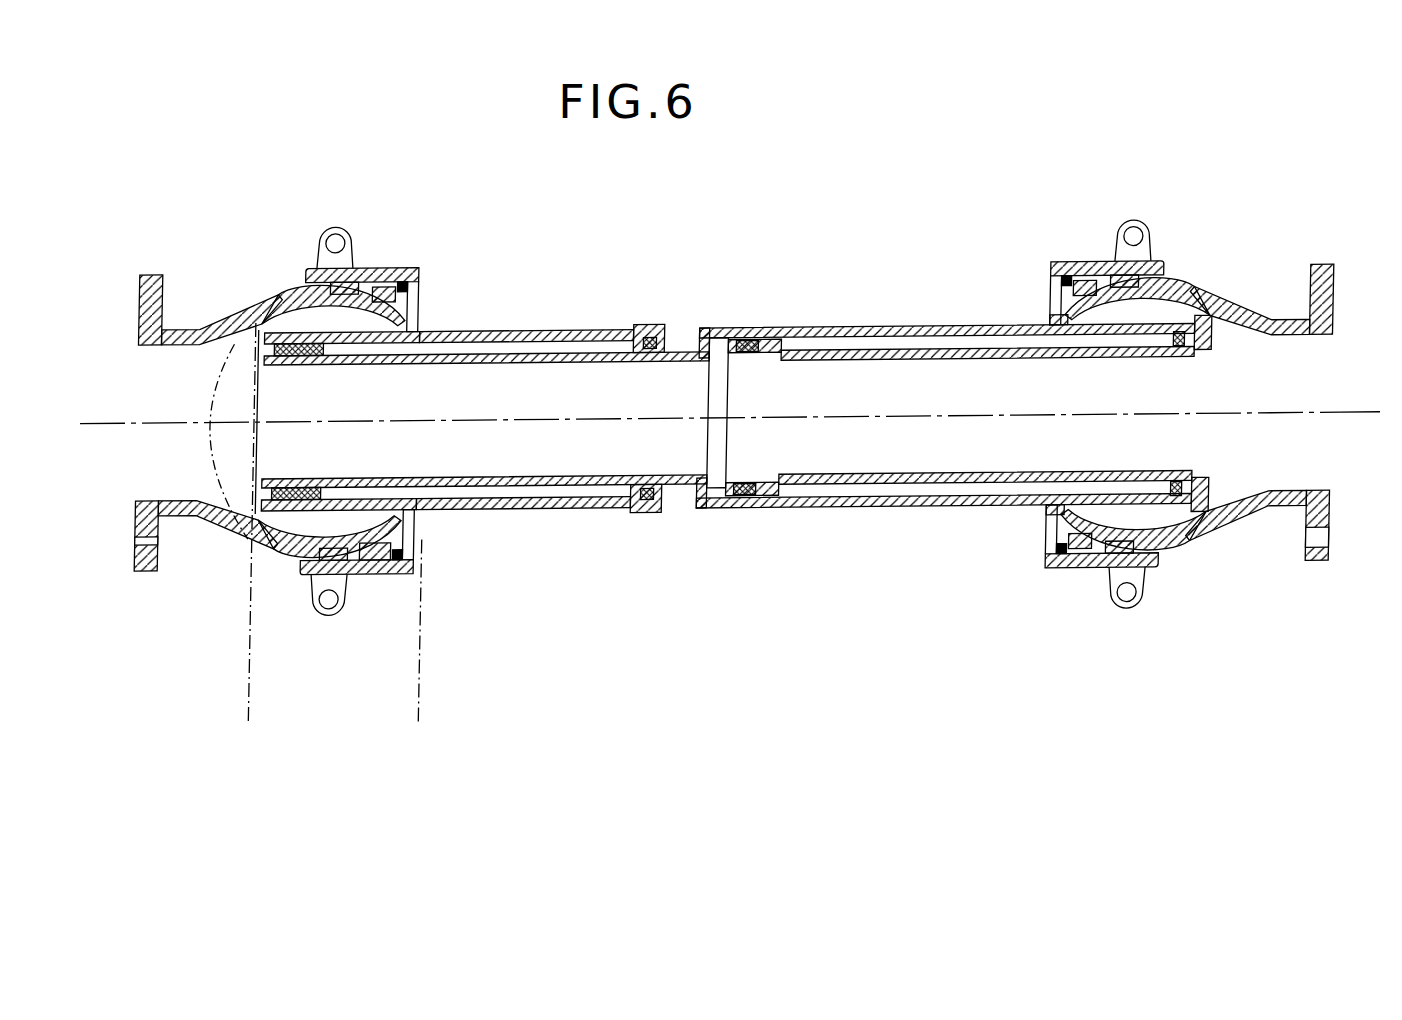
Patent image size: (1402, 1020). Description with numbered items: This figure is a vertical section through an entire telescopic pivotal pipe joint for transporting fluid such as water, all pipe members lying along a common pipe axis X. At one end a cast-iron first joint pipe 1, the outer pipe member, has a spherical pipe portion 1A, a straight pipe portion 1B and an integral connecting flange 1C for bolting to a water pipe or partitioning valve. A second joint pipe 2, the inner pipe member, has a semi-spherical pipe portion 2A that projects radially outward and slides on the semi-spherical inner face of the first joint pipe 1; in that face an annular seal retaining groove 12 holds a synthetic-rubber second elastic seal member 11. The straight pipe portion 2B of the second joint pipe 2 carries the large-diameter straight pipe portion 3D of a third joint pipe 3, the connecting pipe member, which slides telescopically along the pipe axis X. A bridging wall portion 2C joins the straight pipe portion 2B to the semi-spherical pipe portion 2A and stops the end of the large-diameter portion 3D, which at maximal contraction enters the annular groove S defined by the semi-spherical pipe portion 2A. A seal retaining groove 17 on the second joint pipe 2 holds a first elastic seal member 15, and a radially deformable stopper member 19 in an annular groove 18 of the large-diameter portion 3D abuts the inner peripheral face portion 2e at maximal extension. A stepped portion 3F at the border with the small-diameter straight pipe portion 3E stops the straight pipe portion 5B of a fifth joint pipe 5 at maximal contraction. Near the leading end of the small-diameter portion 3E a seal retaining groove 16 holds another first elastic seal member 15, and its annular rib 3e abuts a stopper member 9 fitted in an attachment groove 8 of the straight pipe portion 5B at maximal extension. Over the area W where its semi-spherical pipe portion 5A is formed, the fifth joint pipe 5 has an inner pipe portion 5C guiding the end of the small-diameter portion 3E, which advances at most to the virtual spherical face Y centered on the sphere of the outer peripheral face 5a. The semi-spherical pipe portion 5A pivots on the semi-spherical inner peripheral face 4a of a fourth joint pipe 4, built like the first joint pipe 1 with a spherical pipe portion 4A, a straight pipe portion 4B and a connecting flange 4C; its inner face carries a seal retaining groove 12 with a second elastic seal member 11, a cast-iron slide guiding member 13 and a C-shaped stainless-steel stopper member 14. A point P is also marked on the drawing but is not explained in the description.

The first joint pipe 1 is at (1191, 199).
The spherical pipe portion 1A is at (1170, 281).
The straight pipe portion 1B is at (1285, 332).
The connecting flange 1C is at (1320, 271).
The second joint pipe 2 is at (1010, 435).
The semi-spherical pipe portion 2A is at (1165, 537).
The straight pipe portion 2B is at (959, 492).
The bridging wall portion 2C is at (1242, 505).
The inner peripheral face portion 2e is at (794, 491).
The third joint pipe 3 is at (727, 451).
The large-diameter straight pipe portion 3D is at (834, 498).
The small-diameter straight pipe portion 3E is at (538, 496).
The stepped portion 3F is at (693, 497).
The annular rib 3e is at (318, 486).
The fourth joint pipe 4 is at (154, 199).
The spherical pipe portion 4A is at (275, 299).
The straight pipe portion 4B is at (183, 327).
The connecting flange 4C is at (154, 270).
The semi-spherical inner peripheral face 4a is at (259, 546).
The fifth joint pipe 5 is at (455, 508).
The semi-spherical pipe portion 5A is at (374, 540).
The straight pipe portion 5B is at (604, 496).
The inner pipe portion 5C is at (379, 502).
The outer peripheral face 5a is at (295, 289).
The annular attachment groove 8 is at (648, 486).
The stopper member 9 is at (647, 357).
The second elastic seal member 11 is at (357, 280).
The annular seal retaining groove 12 is at (318, 287).
The slide guiding member 13 is at (372, 280).
The C-shaped stopper member 14 is at (410, 264).
The first elastic seal member 15 is at (287, 341).
The annular seal retaining groove 16 is at (295, 509).
The annular seal retaining groove 17 is at (751, 498).
The annular groove 18 is at (1177, 499).
The stopper member 19 is at (1177, 342).
The pivot center P is at (330, 420).
The annular groove S is at (1119, 517).
The area W is at (254, 710).
The pipe axis X is at (1357, 416).
The virtual spherical face Y is at (291, 473).